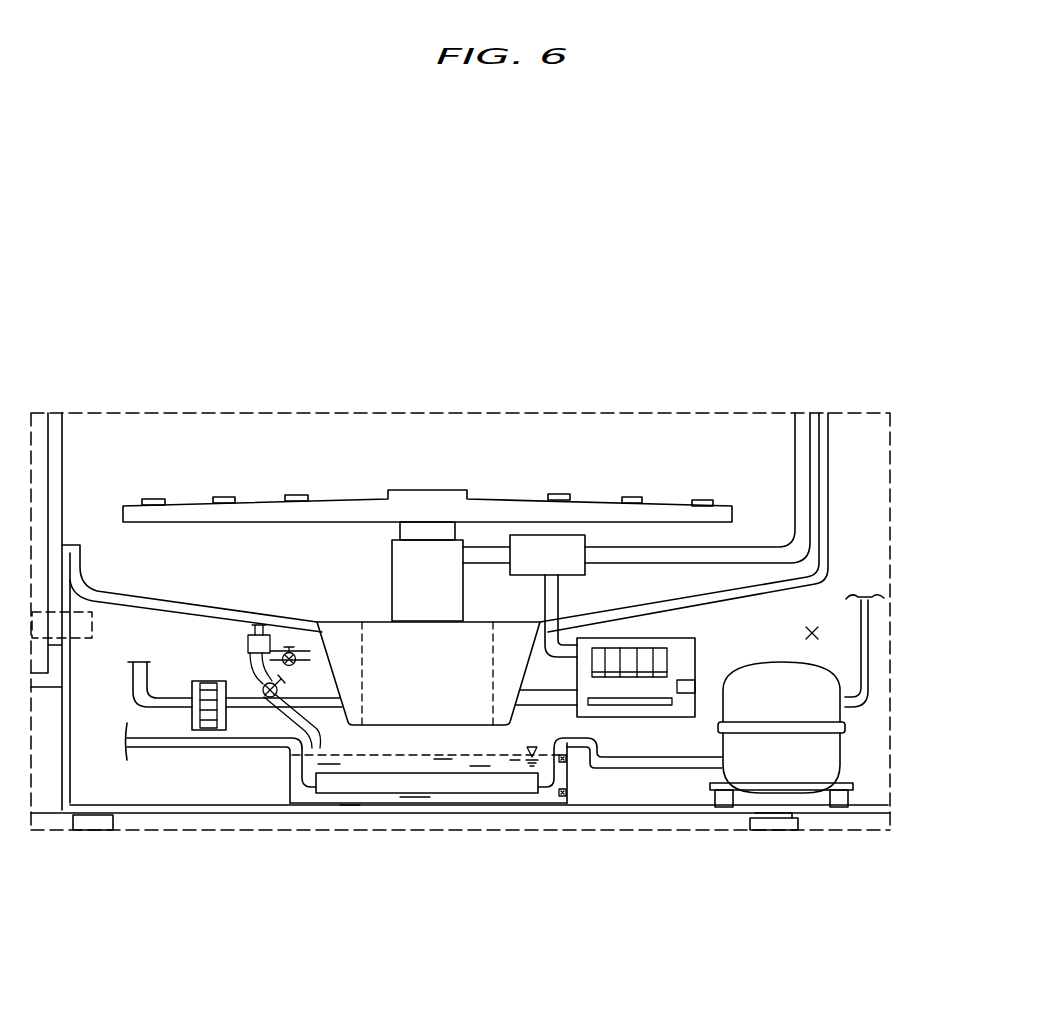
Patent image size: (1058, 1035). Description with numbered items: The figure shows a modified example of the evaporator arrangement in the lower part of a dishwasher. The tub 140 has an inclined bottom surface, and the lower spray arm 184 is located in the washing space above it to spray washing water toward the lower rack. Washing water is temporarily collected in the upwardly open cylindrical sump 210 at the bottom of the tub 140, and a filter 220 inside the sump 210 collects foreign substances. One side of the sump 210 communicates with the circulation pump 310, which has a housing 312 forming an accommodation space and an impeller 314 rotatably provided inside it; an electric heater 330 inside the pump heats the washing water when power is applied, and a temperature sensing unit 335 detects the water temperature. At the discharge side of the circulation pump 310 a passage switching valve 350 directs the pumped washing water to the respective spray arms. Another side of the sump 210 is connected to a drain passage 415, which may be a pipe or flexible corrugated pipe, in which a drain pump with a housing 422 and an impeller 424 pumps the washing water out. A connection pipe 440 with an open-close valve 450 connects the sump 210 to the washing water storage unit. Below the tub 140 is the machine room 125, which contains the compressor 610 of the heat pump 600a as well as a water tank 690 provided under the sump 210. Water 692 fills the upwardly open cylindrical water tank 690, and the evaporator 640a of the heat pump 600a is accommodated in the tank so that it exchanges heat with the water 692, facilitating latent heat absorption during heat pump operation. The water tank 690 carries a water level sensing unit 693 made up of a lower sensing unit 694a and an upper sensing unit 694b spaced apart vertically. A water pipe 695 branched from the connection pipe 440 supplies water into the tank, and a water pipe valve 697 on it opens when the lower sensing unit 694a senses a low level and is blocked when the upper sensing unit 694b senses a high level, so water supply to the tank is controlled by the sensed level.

The tub 140 is at (827, 497).
The machine room 125 is at (818, 633).
The lower spray arm 184 is at (348, 510).
The filter 220 is at (363, 690).
The sump 210 is at (427, 727).
The passage switching valve 350 is at (535, 545).
The circulation pump 310 is at (688, 514).
The housing 312 is at (645, 636).
The impeller 314 is at (613, 657).
The electric heater 330 is at (664, 700).
The temperature sensing unit 335 is at (694, 686).
The open-close valve 450 is at (262, 633).
The connection pipe 440 is at (298, 652).
The water pipe 695 is at (252, 655).
The water pipe valve 697 is at (263, 686).
The drain passage 415 is at (170, 708).
The housing 422 is at (193, 729).
The impeller 424 is at (213, 716).
The water tank 690 is at (287, 781).
The heat pump 600a is at (587, 791).
The evaporator 640a is at (512, 789).
The water 692 is at (478, 797).
The water level sensing unit 693 is at (637, 834).
The lower sensing unit 694a is at (597, 832).
The upper sensing unit 694b is at (567, 760).
The compressor 610 is at (775, 763).